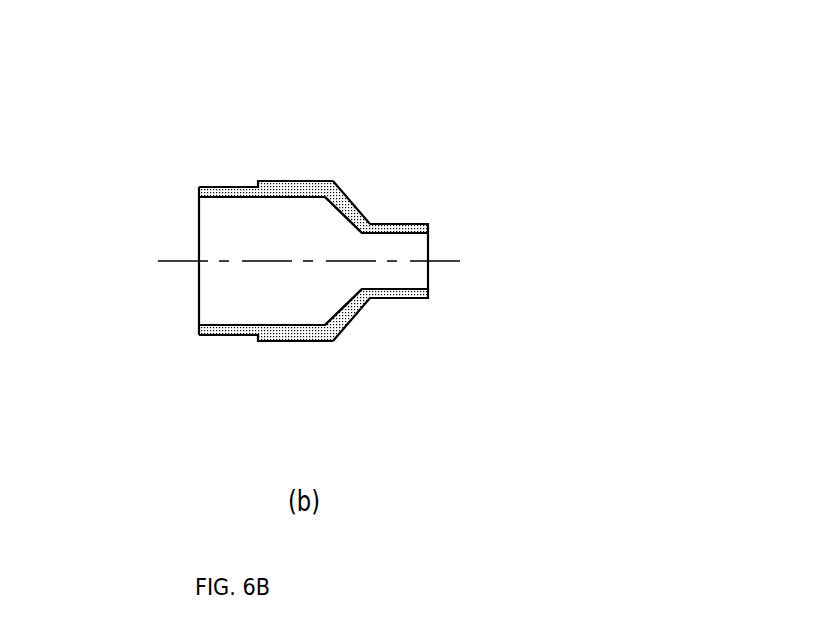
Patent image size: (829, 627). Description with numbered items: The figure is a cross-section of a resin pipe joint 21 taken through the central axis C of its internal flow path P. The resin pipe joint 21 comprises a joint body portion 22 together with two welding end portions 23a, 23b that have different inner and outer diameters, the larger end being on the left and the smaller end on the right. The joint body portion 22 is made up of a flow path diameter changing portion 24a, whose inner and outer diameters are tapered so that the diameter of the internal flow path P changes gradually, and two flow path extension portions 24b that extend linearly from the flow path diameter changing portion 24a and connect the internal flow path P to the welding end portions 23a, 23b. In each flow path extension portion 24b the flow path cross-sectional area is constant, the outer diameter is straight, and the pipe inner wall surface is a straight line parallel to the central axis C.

The resin pipe joint 21 is at (324, 283).
The joint body portion 22 is at (328, 330).
The welding end portion 23a is at (428, 225).
The welding end portion 23b is at (199, 190).
The flow path diameter changing portion 24a is at (362, 316).
The flow path extension portion 24b is at (458, 417).
The internal flow path P is at (250, 312).
The central axis C is at (326, 263).